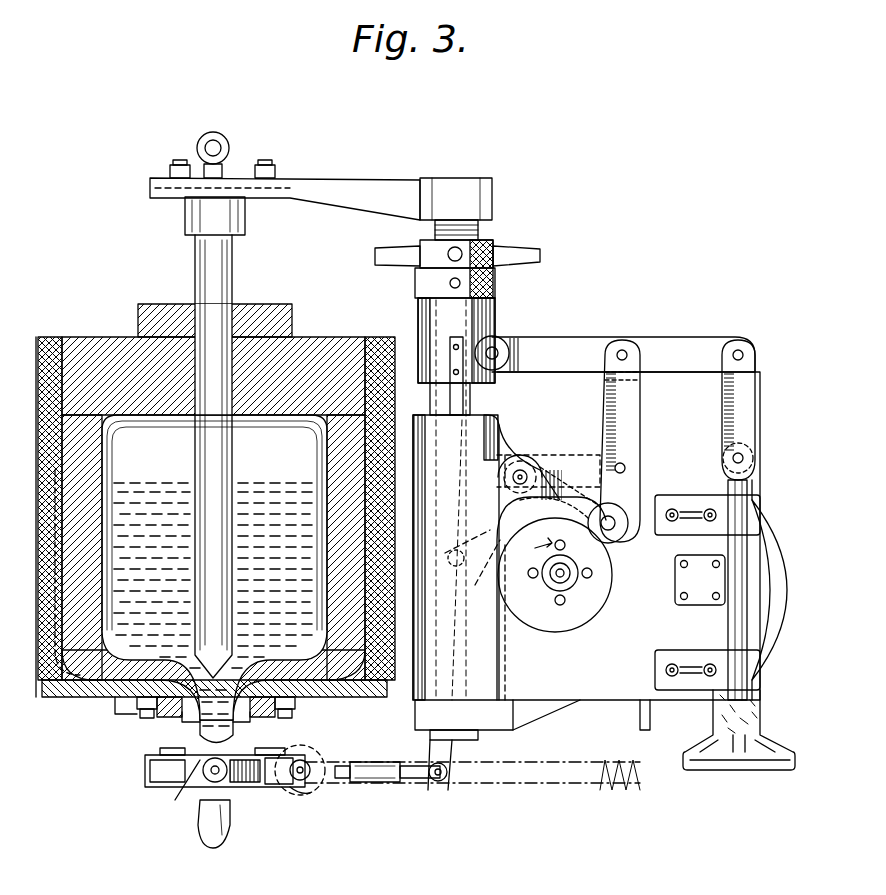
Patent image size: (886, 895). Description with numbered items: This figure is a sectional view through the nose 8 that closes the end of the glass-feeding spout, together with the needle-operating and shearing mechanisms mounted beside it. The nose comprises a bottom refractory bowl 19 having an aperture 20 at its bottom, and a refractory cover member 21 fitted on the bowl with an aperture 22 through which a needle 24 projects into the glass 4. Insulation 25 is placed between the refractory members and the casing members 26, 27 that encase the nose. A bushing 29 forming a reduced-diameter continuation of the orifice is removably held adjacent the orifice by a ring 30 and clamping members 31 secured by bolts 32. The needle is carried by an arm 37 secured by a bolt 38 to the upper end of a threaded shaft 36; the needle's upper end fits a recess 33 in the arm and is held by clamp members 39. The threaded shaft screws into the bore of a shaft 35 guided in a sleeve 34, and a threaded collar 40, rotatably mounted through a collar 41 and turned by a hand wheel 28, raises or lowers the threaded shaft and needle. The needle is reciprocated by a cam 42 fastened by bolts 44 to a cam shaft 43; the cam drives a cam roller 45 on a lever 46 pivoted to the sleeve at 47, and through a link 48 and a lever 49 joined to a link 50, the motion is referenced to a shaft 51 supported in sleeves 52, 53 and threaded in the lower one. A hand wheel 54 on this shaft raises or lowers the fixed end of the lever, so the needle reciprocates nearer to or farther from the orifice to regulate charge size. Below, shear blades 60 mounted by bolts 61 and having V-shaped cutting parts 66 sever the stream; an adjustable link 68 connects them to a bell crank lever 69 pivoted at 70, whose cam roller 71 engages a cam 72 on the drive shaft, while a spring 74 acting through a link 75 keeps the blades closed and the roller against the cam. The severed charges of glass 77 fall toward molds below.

The glass 4 is at (270, 500).
The nose 8 is at (398, 418).
The bottom refractory bowl 19 is at (85, 700).
The aperture 20 is at (236, 720).
The refractory cover member 21 is at (118, 345).
The aperture 22 is at (240, 362).
The needle 24 is at (232, 268).
The insulation 25 is at (58, 638).
The casing member 26 is at (50, 600).
The casing member 27 is at (42, 345).
The hand wheel 28 is at (541, 256).
The bushing 29 is at (182, 720).
The ring 30 is at (165, 714).
The clamping members 31 is at (157, 712).
The bolts 32 is at (137, 705).
The recess 33 is at (232, 176).
The sleeve 34 is at (470, 462).
The shaft 35 is at (470, 400).
The threaded shaft 36 is at (475, 232).
The arm 37 is at (385, 190).
The bolt 38 is at (490, 182).
The clamp members 39 is at (180, 165).
The threaded collar 40 is at (495, 252).
The collar 41 is at (496, 285).
The cam 42 is at (545, 617).
The cam shaft 43 is at (580, 572).
The bolts 44 is at (565, 598).
The cam roller 45 is at (615, 515).
The lever 46 is at (568, 468).
The pivot 47 is at (522, 472).
The link 48 is at (630, 415).
The lever 49 is at (595, 342).
The link 50 is at (746, 406).
The shaft 51 is at (730, 622).
The sleeve 52 is at (752, 512).
The lower sleeve 53 is at (752, 690).
The hand wheel 54 is at (748, 772).
The shear blades 60 is at (150, 775).
The bolts 61 is at (279, 771).
The cutting parts 66 is at (175, 800).
The adjustable link 68 is at (405, 782).
The bell crank lever 69 is at (455, 742).
The pivot 70 is at (448, 555).
The cam roller 71 is at (548, 471).
The cam 72 is at (568, 493).
The spring 74 is at (350, 778).
The link 75 is at (290, 792).
The charges of glass 77 is at (232, 826).